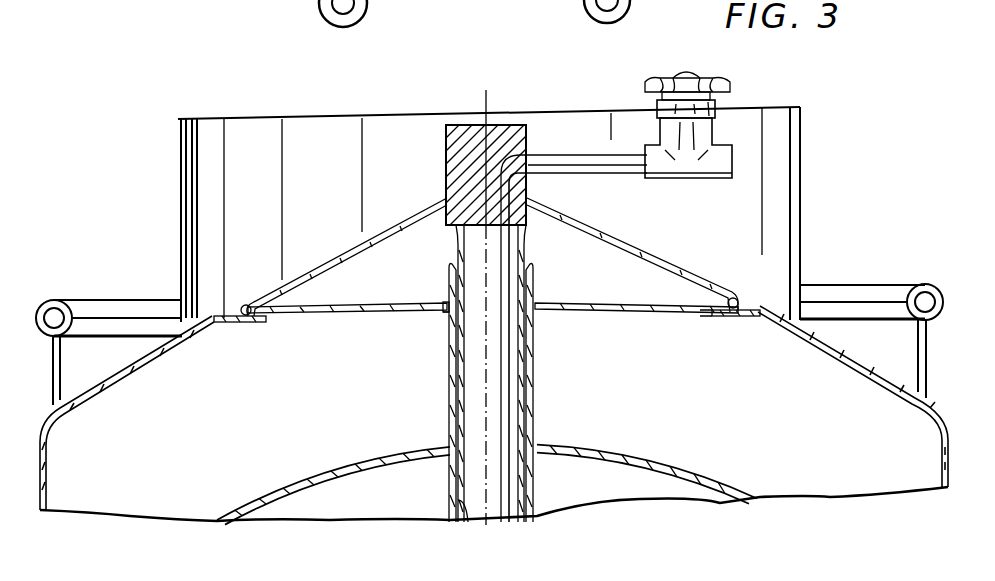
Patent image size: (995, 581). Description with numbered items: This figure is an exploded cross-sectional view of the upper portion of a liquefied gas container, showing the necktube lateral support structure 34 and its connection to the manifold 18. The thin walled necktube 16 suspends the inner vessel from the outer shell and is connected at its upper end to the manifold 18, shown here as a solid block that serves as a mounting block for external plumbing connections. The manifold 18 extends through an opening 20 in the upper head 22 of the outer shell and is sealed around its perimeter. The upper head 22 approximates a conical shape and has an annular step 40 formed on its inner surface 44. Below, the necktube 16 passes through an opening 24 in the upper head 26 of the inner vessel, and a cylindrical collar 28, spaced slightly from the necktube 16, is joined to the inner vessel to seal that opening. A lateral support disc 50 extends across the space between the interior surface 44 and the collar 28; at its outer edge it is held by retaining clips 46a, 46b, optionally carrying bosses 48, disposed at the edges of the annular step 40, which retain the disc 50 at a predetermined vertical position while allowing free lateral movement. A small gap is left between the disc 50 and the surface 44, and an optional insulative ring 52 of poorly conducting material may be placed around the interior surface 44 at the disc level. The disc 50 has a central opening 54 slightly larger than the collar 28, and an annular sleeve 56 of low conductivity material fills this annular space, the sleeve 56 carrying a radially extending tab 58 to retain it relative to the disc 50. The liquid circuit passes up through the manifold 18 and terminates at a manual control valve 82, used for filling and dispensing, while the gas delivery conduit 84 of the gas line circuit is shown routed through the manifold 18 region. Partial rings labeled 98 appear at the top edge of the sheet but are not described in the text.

The necktube 16 is at (470, 510).
The manifold 18 is at (447, 140).
The opening 20 is at (447, 212).
The upper head 22 is at (362, 254).
The opening 24 is at (540, 434).
The upper head 26 is at (266, 486).
The cylindrical collar 28 is at (540, 393).
The necktube lateral support structure 34 is at (388, 396).
The annular step 40 is at (226, 305).
The inner surface 44 is at (180, 362).
The retaining clip 46a is at (242, 323).
The retaining clip 46b is at (728, 317).
The boss 48 is at (700, 316).
The lateral support disc 50 is at (333, 315).
The insulative ring 52 is at (740, 301).
The central opening 54 is at (446, 315).
The annular sleeve 56 is at (548, 303).
The radially extending tab 58 is at (444, 302).
The manual control valve 82 is at (692, 72).
The gas delivery conduit 84 is at (530, 252).
The rings 98 is at (474, 13).